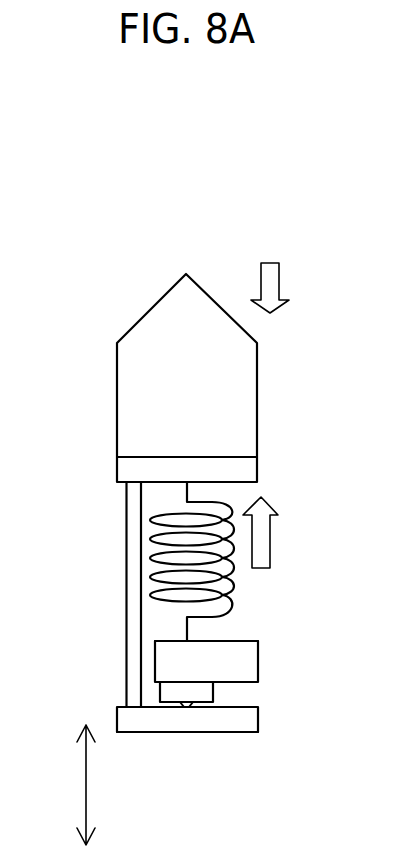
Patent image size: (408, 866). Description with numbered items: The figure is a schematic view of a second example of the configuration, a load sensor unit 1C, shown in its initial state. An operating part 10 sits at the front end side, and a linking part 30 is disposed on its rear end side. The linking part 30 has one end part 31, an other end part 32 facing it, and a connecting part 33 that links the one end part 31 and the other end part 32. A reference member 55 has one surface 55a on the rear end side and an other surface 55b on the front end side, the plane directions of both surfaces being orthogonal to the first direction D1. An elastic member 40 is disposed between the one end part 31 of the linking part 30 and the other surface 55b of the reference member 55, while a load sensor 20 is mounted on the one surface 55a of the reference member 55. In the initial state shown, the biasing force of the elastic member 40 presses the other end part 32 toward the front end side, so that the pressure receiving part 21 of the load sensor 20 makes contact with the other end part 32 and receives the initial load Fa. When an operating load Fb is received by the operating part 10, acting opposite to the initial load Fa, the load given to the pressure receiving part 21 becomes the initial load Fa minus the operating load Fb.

The load sensor unit 1C is at (260, 183).
The operating part 10 is at (246, 389).
The one end part 31 is at (245, 473).
The linking part 30 is at (125, 553).
The connecting part 33 is at (133, 600).
The elastic member 40 is at (228, 585).
The reference member 55 is at (247, 660).
The other surface 55b is at (243, 641).
The one surface 55a is at (213, 697).
The load sensor 20 is at (245, 683).
The other end part 32 is at (250, 725).
The pressure receiving part 21 is at (195, 708).
The first direction D1 is at (85, 790).
The initial load Fa is at (278, 532).
The operating load Fb is at (293, 288).